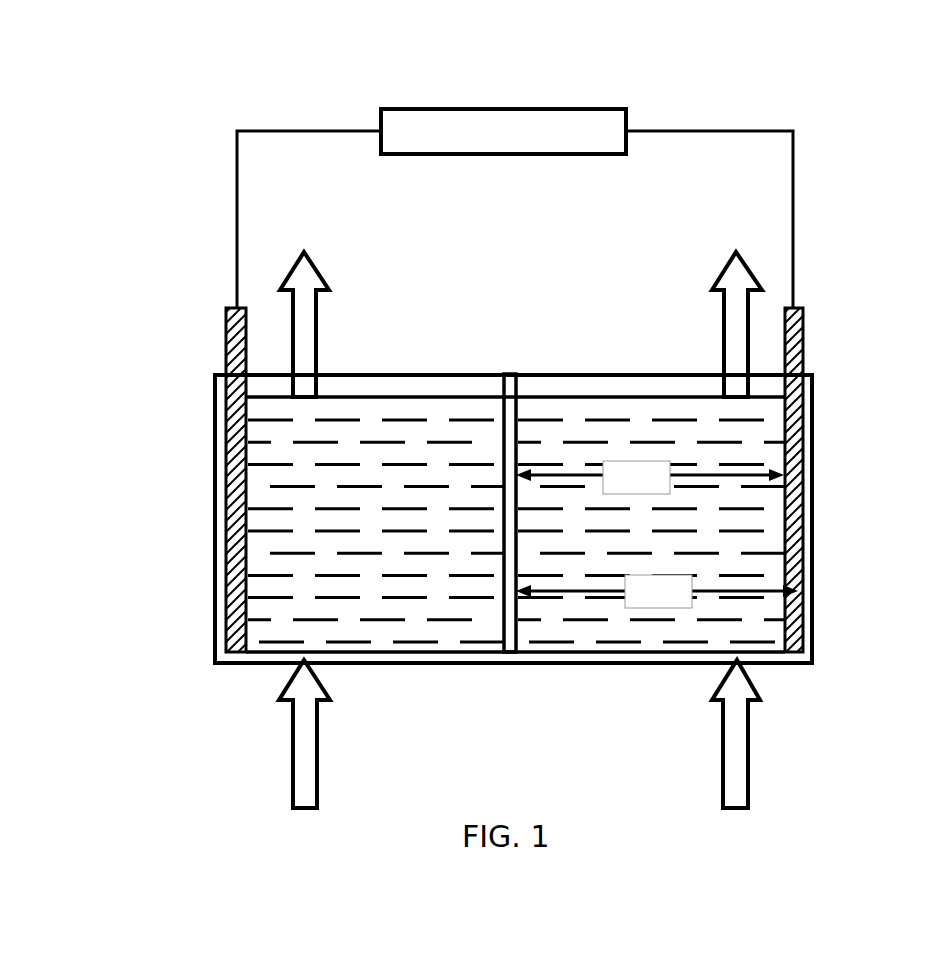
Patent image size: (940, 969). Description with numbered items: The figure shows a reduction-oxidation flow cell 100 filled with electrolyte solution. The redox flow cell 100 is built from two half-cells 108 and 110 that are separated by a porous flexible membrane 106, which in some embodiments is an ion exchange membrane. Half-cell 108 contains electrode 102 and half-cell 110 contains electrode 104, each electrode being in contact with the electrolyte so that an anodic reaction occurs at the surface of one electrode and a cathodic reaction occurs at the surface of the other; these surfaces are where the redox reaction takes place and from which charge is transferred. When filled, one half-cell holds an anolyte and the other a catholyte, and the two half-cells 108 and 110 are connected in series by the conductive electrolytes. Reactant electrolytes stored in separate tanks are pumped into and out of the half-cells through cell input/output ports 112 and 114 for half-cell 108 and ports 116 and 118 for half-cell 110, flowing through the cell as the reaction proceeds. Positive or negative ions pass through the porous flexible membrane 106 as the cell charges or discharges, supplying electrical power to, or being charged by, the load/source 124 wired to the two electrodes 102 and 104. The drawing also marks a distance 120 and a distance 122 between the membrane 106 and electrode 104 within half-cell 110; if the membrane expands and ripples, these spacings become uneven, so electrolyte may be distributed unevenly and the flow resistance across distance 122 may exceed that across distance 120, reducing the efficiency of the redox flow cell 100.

The redox flow cell 100 is at (213, 88).
The electrode 102 is at (226, 340).
The electrode 104 is at (803, 348).
The porous flexible membrane 106 is at (503, 636).
The half-cell 108 is at (352, 430).
The half-cell 110 is at (695, 435).
The cell input/output port 112 is at (290, 758).
The cell input/output port 114 is at (316, 312).
The cell input/output port 116 is at (748, 753).
The cell input/output port 118 is at (723, 325).
The distance 120 is at (650, 477).
The distance 122 is at (657, 591).
The load/source 124 is at (512, 108).